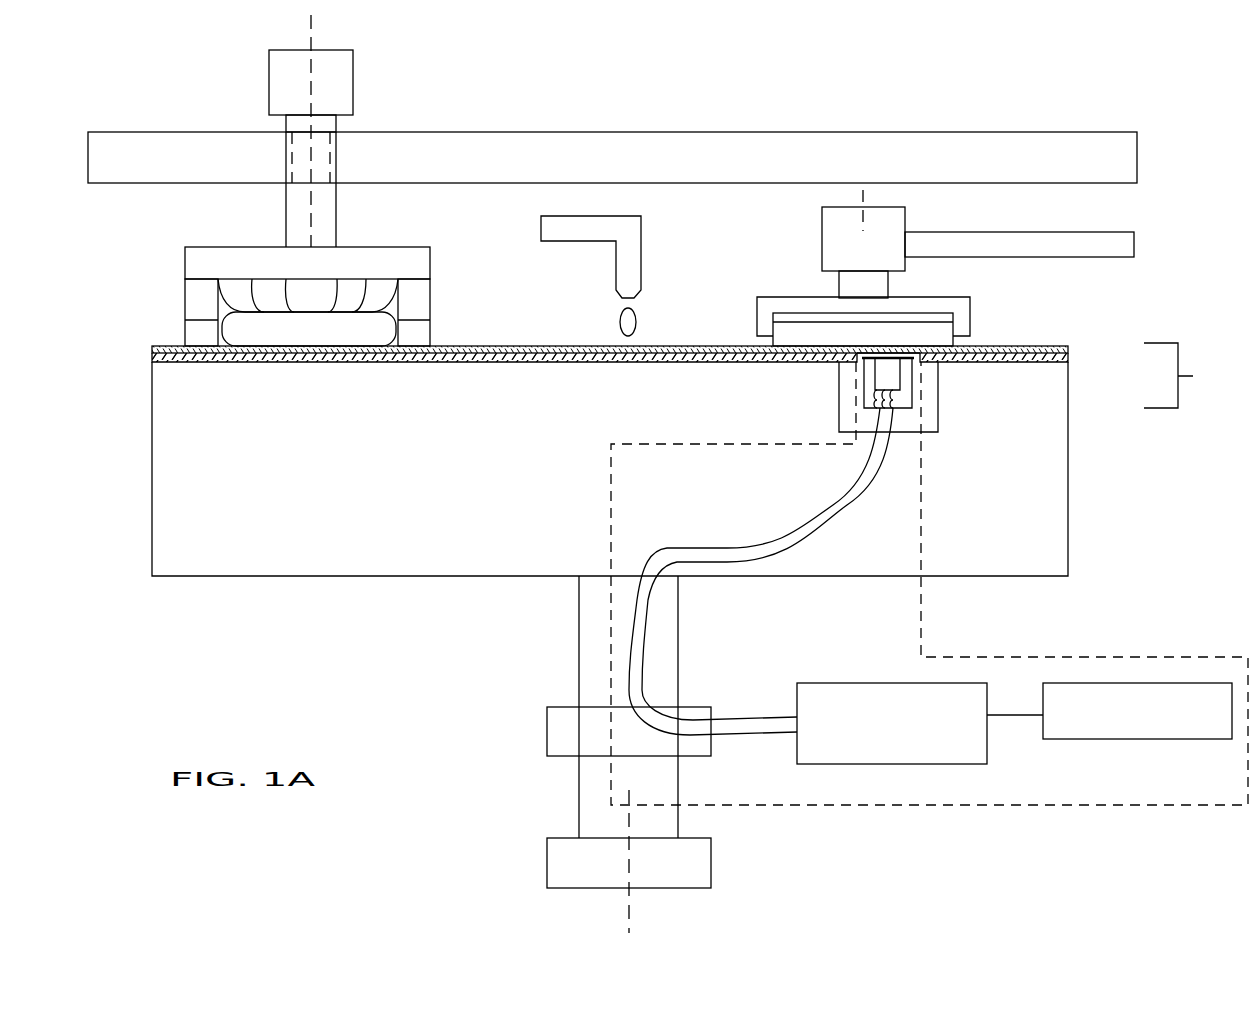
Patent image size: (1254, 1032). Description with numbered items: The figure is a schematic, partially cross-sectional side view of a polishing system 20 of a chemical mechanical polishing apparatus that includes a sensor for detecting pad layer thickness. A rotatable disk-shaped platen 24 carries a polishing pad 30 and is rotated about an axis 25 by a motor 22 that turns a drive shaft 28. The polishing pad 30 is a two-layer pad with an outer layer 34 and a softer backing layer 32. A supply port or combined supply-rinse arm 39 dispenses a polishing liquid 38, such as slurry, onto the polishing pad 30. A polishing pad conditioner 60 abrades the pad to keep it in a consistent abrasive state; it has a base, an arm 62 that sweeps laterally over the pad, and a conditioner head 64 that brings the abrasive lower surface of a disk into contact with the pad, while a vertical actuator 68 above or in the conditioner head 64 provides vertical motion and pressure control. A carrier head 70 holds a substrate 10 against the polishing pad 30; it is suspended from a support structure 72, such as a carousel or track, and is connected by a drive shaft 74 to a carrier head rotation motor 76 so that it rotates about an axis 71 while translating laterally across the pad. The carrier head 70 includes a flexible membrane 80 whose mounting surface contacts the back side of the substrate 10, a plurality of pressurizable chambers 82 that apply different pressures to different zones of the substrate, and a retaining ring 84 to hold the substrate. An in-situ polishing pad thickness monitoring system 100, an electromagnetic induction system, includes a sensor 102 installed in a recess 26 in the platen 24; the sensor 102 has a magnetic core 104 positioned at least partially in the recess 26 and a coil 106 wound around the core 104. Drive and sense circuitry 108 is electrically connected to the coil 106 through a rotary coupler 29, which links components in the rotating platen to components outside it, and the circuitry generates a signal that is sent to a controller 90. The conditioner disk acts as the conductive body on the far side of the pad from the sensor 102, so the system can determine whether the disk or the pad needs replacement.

The polishing system 20 is at (172, 96).
The axis 71 is at (312, 30).
The carrier head rotation motor 76 is at (269, 97).
The support structure 72 is at (1105, 130).
The carrier head 70 is at (168, 268).
The drive shaft 74 is at (286, 227).
The flexible membrane 80 is at (372, 290).
The pressurizable chambers 82 is at (309, 295).
The substrate 10 is at (309, 329).
The retaining ring 84 is at (431, 328).
The supply-rinse arm 39 is at (616, 264).
The polishing liquid 38 is at (620, 324).
The polishing pad conditioner 60 is at (1152, 228).
The arm 62 is at (1048, 232).
The vertical actuator 68 is at (822, 226).
The conditioner head 64 is at (757, 323).
The polishing pad 30 is at (1183, 375).
The backing layer 32 is at (1068, 350).
The outer layer 34 is at (1068, 358).
The platen 24 is at (1070, 490).
The recess 26 is at (938, 415).
The in-situ polishing pad thickness monitoring system 100 is at (1133, 657).
The magnetic core 104 is at (913, 376).
The coil 106 is at (870, 396).
The sensor 102 is at (906, 418).
The drive and sense circuitry 108 is at (797, 696).
The controller 90 is at (1140, 740).
The drive shaft 28 is at (579, 640).
The rotary coupler 29 is at (547, 730).
The motor 22 is at (712, 868).
The axis 25 is at (632, 912).